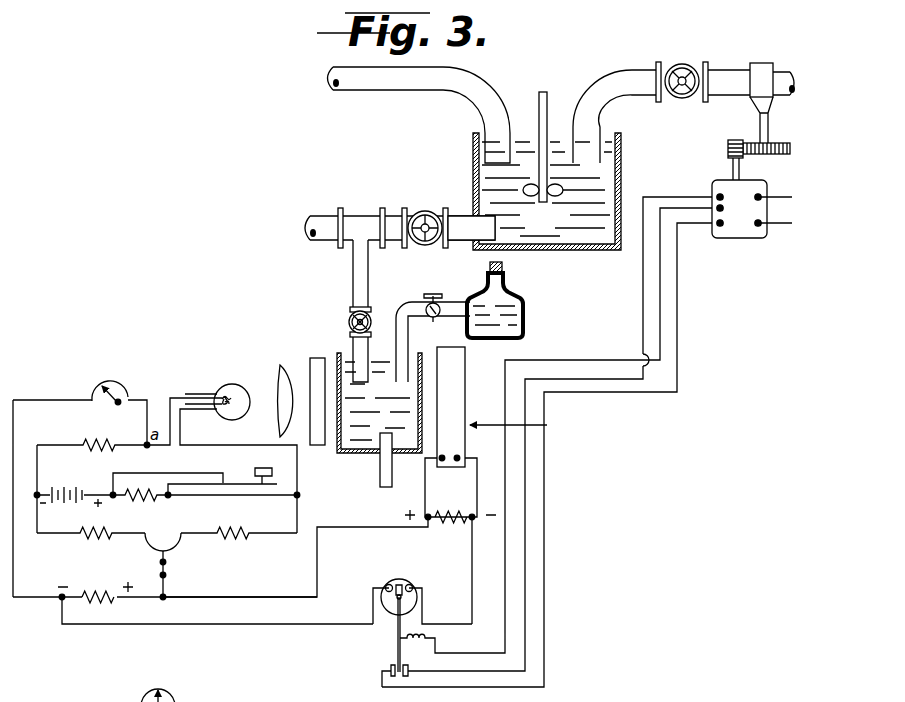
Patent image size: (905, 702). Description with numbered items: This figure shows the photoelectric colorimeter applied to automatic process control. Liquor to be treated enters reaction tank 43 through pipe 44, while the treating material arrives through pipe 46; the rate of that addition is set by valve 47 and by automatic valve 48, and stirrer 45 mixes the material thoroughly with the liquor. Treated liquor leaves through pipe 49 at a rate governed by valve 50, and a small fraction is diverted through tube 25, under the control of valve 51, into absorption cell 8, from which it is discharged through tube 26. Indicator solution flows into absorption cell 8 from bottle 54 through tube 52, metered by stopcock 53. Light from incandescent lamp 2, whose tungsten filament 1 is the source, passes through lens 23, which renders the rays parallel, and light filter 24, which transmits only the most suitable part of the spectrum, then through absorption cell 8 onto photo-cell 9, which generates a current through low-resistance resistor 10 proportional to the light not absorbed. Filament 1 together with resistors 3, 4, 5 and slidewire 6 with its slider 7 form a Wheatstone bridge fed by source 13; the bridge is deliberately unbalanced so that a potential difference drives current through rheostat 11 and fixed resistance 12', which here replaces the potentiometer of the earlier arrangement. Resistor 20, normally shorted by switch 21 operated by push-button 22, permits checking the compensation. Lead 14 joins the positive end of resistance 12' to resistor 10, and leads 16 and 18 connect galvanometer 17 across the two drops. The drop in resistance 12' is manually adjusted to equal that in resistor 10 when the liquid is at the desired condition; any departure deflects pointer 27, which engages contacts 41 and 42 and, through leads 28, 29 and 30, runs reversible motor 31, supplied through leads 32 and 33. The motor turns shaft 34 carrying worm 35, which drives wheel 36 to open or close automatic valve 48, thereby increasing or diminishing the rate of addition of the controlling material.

The filament 1 is at (230, 415).
The electric incandescent lamp 2 is at (230, 390).
The resistor 3 is at (98, 440).
The resistor 4 is at (104, 533).
The resistor 5 is at (248, 534).
The slidewire 6 is at (171, 552).
The slider 7 is at (167, 562).
The absorption cell 8 is at (355, 460).
The photo-cell 9 is at (466, 416).
The resistor 10 is at (456, 517).
The rheostat 11 is at (123, 392).
The fixed resistance 12' is at (95, 584).
The source 13 is at (86, 490).
The lead 14 is at (255, 597).
The lead 16 is at (240, 625).
The galvanometer 17 is at (418, 604).
The lead 18 is at (472, 563).
The resistor 20 is at (146, 503).
The switch 21 is at (240, 479).
The push-button 22 is at (278, 468).
The lens 23 is at (282, 370).
The light filter 24 is at (315, 355).
The tube 25 is at (353, 282).
The tube 26 is at (385, 478).
The pointer 27 is at (399, 634).
The lead 28 is at (496, 652).
The lead 29 is at (477, 692).
The lead 30 is at (480, 673).
The reversible motor 31 is at (739, 209).
The lead 32 is at (775, 198).
The lead 33 is at (777, 224).
The shaft 34 is at (733, 172).
The worm 35 is at (728, 150).
The wheel 36 is at (775, 154).
The contact 41 is at (388, 667).
The contact 42 is at (408, 672).
The reaction tank 43 is at (573, 250).
The pipe 44 is at (436, 68).
The stirrer 45 is at (548, 116).
The pipe 46 is at (612, 76).
The valve 47 is at (700, 66).
The automatic valve 48 is at (762, 72).
The pipe 49 is at (338, 220).
The valve 50 is at (437, 208).
The valve 51 is at (347, 326).
The tube 52 is at (404, 330).
The stopcock 53 is at (436, 298).
The bottle 54 is at (528, 324).